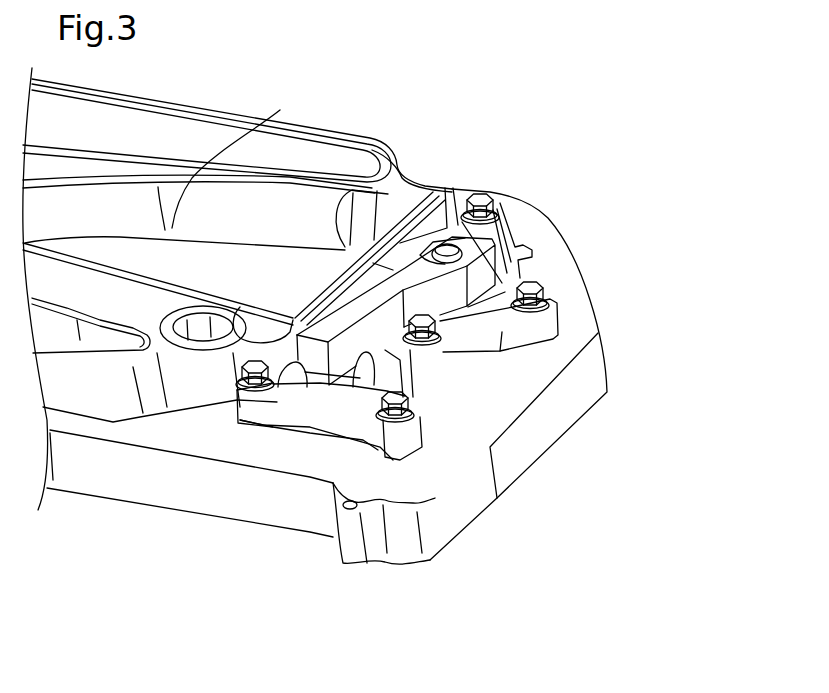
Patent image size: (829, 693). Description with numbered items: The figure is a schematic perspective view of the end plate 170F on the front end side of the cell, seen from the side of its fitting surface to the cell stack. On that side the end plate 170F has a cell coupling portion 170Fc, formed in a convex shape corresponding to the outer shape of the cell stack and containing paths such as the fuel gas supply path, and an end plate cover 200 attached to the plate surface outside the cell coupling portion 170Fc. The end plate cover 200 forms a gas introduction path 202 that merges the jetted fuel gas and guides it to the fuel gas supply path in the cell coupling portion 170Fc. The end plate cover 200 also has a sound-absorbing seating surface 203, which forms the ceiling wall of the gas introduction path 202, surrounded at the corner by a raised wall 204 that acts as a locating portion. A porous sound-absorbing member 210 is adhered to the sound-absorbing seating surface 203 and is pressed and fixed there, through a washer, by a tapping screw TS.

The end plate 170F is at (590, 372).
The cell coupling portion 170Fc is at (268, 124).
The sound-absorbing member 210 is at (390, 152).
The tapping screw TS is at (503, 232).
The end plate cover 200 is at (545, 324).
The gas introduction path 202 is at (368, 350).
The sound-absorbing seating surface 203 is at (378, 457).
The raised wall 204 is at (283, 398).